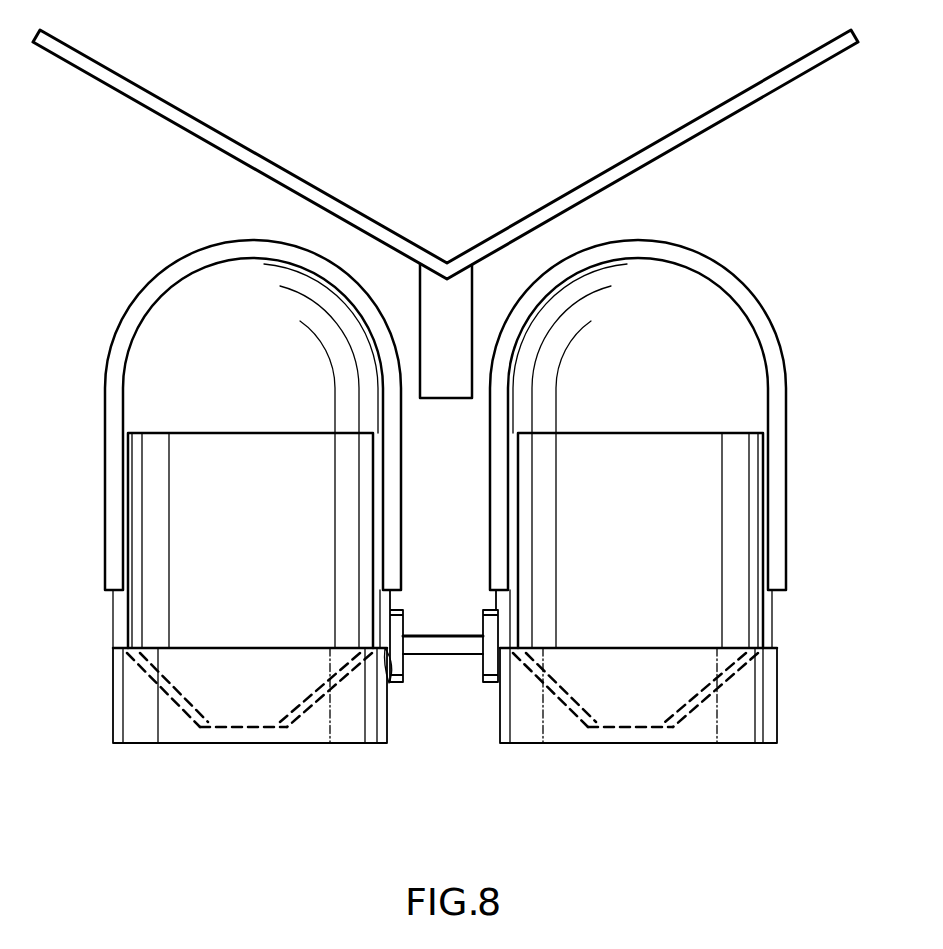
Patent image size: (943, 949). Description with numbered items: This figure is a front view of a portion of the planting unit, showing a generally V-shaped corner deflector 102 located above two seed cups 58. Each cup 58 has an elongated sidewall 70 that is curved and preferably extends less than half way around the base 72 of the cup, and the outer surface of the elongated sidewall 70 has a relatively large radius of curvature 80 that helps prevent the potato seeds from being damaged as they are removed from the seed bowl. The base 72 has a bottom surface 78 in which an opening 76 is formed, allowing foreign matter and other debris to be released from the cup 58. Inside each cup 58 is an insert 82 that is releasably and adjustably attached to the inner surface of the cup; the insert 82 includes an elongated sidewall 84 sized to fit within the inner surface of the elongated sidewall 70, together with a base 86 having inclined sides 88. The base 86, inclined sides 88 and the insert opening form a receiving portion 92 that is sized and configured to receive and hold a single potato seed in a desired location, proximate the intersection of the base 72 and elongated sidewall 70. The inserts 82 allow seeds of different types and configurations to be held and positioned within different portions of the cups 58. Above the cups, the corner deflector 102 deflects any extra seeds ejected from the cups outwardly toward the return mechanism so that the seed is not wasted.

The cup 58 is at (128, 263).
The elongated sidewall 70 is at (268, 278).
The radius of curvature 80 is at (193, 258).
The insert 82 is at (170, 452).
The elongated sidewall of insert 84 is at (155, 525).
The receiving portion 92 is at (198, 640).
The base 72 is at (310, 733).
The opening 76 is at (242, 738).
The bottom surface 78 is at (183, 743).
The base of insert 86 is at (338, 690).
The inclined sides 88 is at (163, 690).
The corner deflector 102 is at (723, 112).